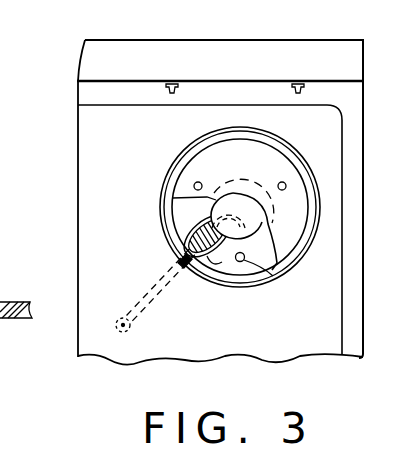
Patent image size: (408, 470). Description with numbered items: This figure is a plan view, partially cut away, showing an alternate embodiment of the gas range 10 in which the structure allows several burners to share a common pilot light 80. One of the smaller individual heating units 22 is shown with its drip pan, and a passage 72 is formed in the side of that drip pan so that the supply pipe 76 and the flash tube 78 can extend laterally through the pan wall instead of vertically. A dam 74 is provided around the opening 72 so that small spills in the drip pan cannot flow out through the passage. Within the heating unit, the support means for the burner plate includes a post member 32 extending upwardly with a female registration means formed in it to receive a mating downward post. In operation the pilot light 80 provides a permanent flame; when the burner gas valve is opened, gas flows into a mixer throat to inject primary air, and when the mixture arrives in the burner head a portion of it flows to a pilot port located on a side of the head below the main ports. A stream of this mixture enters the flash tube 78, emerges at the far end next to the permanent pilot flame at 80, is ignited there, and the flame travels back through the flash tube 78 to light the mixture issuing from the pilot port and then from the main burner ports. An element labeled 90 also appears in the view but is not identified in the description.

The range 10 is at (366, 143).
The individual heating unit 22 is at (141, 167).
The post member 32 is at (267, 287).
The passage 72 is at (192, 240).
The dam 74 is at (210, 211).
The supply pipe 76 is at (219, 264).
The flash tube 78 is at (153, 303).
The pilot light 80 is at (122, 318).
The wall 90 is at (16, 282).